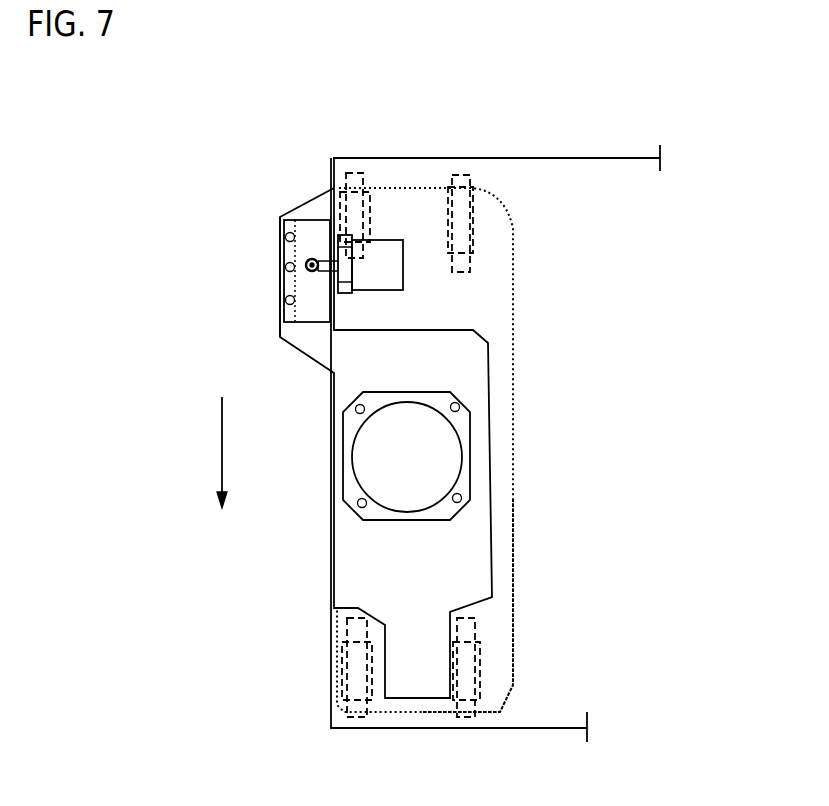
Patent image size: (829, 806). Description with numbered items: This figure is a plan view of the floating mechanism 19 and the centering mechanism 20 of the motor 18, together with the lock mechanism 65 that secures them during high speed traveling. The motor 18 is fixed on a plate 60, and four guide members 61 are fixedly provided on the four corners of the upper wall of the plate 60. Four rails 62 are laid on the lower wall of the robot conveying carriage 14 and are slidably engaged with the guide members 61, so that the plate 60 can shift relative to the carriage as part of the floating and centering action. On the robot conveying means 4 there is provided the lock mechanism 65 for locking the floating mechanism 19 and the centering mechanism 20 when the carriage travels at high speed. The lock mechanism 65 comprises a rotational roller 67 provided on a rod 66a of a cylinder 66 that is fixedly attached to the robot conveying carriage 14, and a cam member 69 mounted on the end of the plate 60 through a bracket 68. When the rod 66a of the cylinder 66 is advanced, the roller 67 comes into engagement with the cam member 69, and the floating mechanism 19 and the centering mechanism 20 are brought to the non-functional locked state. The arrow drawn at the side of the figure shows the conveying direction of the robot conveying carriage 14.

The robot conveying means 4 is at (495, 416).
The robot conveying carriage 14 is at (485, 158).
The motor 18 is at (462, 455).
The floating mechanism 19 is at (518, 450).
The centering mechanism 20 is at (599, 332).
The plate 60 is at (334, 540).
The guide members 61 is at (340, 213).
The rails 62 is at (347, 177).
The lock mechanism 65 is at (389, 203).
The cylinder 66 is at (403, 282).
The rod 66a is at (308, 273).
The rotational roller 67 is at (283, 252).
The bracket 68 is at (282, 272).
The cam member 69 is at (283, 282).